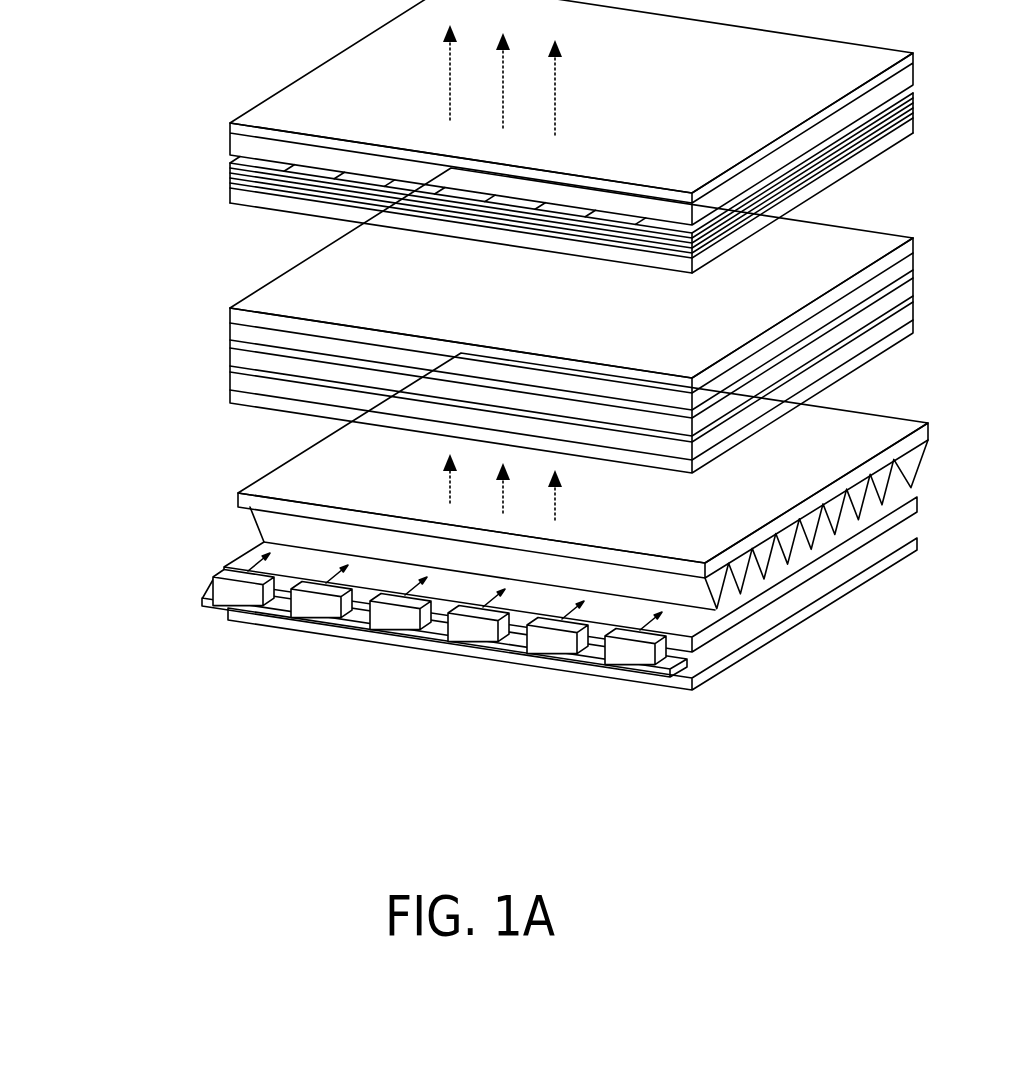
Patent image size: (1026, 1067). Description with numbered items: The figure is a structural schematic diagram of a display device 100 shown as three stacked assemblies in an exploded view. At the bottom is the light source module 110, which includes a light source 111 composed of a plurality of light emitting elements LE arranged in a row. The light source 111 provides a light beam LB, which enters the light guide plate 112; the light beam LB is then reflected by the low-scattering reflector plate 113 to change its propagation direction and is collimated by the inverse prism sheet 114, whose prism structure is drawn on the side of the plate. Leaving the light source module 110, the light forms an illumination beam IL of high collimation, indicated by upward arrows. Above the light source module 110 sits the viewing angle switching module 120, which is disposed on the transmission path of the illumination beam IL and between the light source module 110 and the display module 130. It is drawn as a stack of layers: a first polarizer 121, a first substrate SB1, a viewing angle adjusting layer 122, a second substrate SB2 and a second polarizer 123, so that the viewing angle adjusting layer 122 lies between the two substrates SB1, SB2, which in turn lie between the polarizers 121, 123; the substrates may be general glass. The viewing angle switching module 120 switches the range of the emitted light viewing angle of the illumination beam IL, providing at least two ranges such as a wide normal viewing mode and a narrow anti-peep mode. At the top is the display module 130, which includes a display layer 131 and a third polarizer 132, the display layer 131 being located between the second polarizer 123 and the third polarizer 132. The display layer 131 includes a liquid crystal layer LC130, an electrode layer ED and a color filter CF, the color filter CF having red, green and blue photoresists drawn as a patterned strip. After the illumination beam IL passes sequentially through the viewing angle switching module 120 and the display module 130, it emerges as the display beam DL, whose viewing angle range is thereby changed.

The display device 100 is at (470, 395).
The light source module 110 is at (105, 503).
The light source 111 is at (197, 591).
The light guide plate 112 is at (248, 558).
The low-scattering reflector plate 113 is at (240, 617).
The inverse prism sheet 114 is at (277, 529).
The light emitting elements LE is at (630, 648).
The light beam LB is at (693, 630).
The illumination beam IL is at (557, 505).
The display beam DL is at (557, 103).
The viewing angle switching module 120 is at (138, 273).
The first polarizer 121 is at (247, 398).
The viewing angle adjusting layer 122 is at (227, 340).
The second polarizer 123 is at (247, 317).
The first substrate SB1 is at (250, 382).
The second substrate SB2 is at (248, 336).
The display module 130 is at (67, 108).
The display layer 131 is at (127, 140).
The third polarizer 132 is at (248, 133).
The color filter CF is at (214, 172).
The electrode layer ED is at (233, 180).
The liquid crystal layer LC130 is at (257, 198).